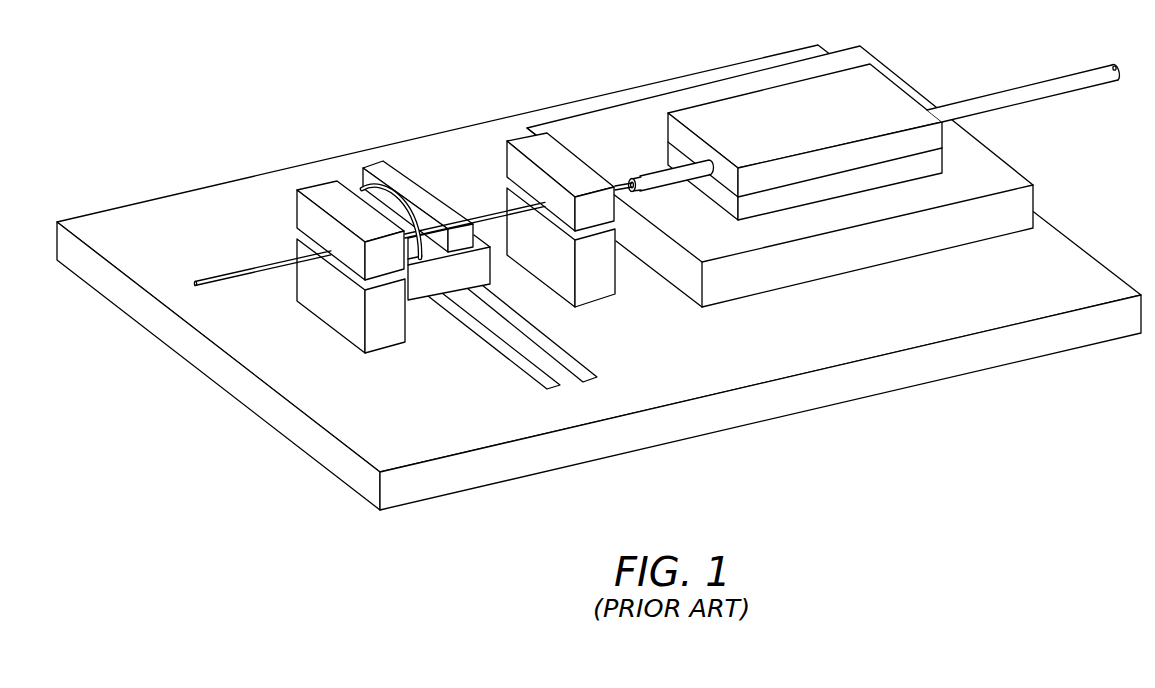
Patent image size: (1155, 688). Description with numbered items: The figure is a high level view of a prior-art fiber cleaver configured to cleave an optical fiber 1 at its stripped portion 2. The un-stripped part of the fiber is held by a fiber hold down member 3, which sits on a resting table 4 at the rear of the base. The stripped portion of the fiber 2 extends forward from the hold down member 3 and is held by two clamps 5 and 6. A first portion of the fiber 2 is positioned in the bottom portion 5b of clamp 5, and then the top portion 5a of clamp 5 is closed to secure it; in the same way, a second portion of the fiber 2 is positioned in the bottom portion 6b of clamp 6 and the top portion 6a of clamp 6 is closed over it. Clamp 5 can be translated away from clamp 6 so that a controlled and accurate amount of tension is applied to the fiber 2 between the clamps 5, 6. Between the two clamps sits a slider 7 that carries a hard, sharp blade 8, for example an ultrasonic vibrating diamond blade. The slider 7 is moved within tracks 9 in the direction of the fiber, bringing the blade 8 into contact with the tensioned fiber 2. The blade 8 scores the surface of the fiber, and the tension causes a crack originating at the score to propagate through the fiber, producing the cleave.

The optical fiber 1 is at (1061, 77).
The stripped portion of the fiber 2 is at (248, 269).
The fiber hold down member 3 is at (886, 84).
The resting table 4 is at (1034, 204).
The clamp 5 is at (544, 193).
The top portion of clamp 5a is at (518, 138).
The bottom portion of clamp 5b is at (603, 292).
The clamp 6 is at (302, 222).
The top portion of clamp 6a is at (350, 201).
The bottom portion of clamp 6b is at (337, 322).
The slider 7 is at (417, 195).
The blade 8 is at (362, 188).
The tracks 9 is at (455, 337).